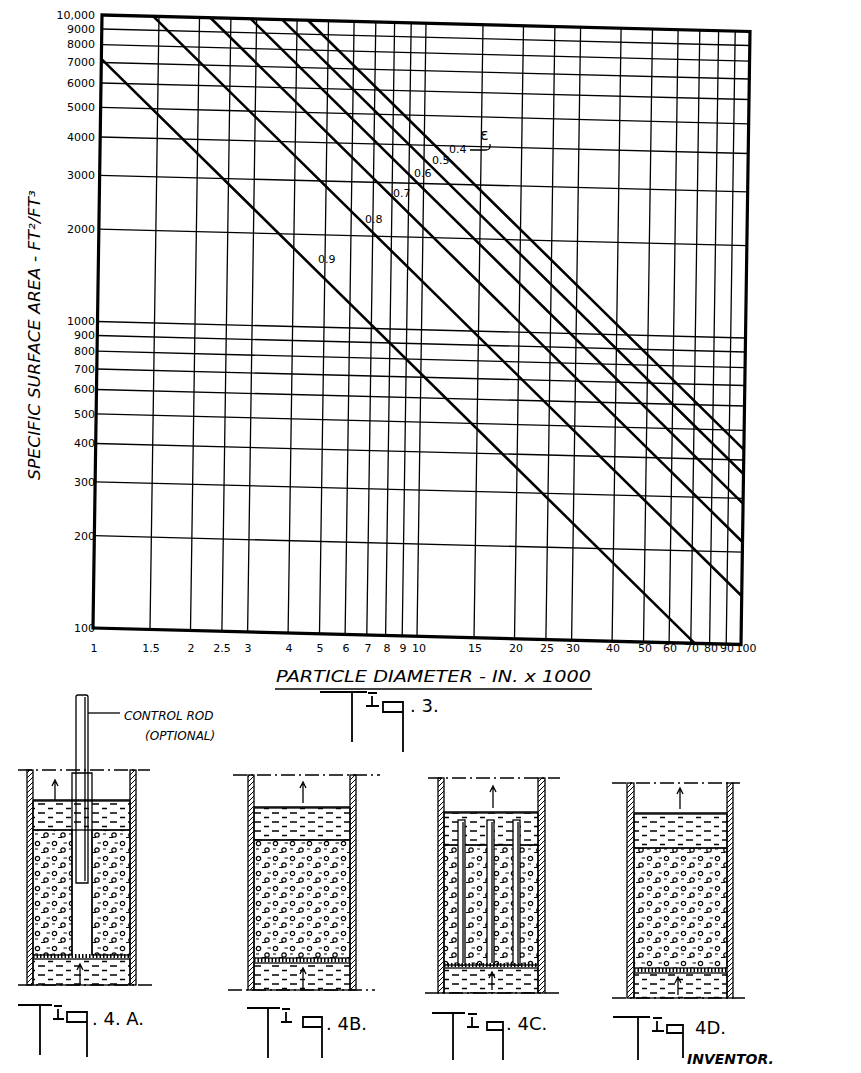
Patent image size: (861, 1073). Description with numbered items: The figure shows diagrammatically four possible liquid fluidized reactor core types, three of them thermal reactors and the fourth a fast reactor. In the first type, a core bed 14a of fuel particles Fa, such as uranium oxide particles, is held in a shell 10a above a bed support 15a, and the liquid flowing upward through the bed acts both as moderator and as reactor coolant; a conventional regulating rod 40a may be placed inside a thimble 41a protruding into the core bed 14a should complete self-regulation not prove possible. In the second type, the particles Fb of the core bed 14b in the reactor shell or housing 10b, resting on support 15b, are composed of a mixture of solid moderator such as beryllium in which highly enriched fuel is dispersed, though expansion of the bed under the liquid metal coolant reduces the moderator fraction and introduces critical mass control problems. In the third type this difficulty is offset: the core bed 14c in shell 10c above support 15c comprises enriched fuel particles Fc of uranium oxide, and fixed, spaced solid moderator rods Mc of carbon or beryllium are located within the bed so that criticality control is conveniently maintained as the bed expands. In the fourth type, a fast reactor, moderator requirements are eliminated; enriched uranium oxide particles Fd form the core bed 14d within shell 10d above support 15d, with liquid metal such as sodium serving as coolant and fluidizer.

In FIG. 4A, the shell 10a is at (136, 808).
In FIG. 4A, the core bed 14a is at (136, 891).
In FIG. 4A, the support screen 15a is at (125, 963).
In FIG. 4A, the fuel particles Fa is at (118, 858).
In FIG. 4A, the regulating rod 40a is at (78, 727).
In FIG. 4A, the thimble 41a is at (71, 777).
In FIG. 4B, the reactor shell or housing 10b is at (357, 940).
In FIG. 4B, the core bed 14b is at (340, 905).
In FIG. 4B, the support screen 15b is at (335, 966).
In FIG. 4B, the particles Fb is at (335, 846).
In FIG. 4C, the shell 10c is at (546, 935).
In FIG. 4C, the core bed 14c is at (528, 892).
In FIG. 4C, the support screen 15c is at (530, 971).
In FIG. 4C, the enriched fuel particles Fc is at (530, 867).
In FIG. 4C, the solid moderator rods Mc is at (520, 829).
In FIG. 4D, the shell 10d is at (735, 935).
In FIG. 4D, the core bed 14d is at (722, 893).
In FIG. 4D, the support screen 15d is at (715, 973).
In FIG. 4D, the particles Fd is at (705, 864).